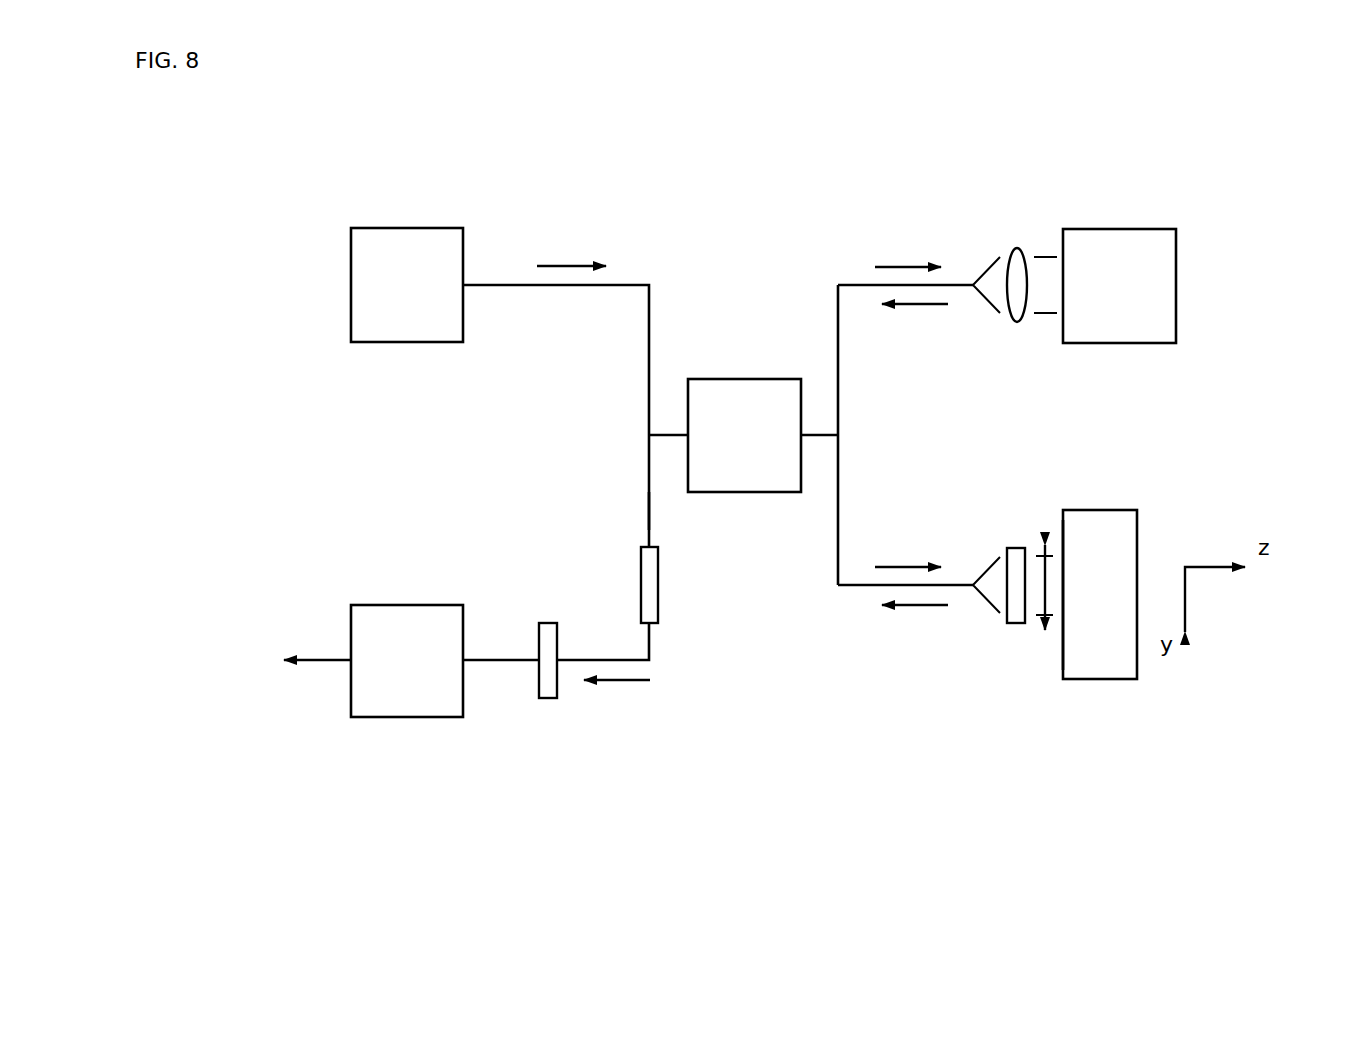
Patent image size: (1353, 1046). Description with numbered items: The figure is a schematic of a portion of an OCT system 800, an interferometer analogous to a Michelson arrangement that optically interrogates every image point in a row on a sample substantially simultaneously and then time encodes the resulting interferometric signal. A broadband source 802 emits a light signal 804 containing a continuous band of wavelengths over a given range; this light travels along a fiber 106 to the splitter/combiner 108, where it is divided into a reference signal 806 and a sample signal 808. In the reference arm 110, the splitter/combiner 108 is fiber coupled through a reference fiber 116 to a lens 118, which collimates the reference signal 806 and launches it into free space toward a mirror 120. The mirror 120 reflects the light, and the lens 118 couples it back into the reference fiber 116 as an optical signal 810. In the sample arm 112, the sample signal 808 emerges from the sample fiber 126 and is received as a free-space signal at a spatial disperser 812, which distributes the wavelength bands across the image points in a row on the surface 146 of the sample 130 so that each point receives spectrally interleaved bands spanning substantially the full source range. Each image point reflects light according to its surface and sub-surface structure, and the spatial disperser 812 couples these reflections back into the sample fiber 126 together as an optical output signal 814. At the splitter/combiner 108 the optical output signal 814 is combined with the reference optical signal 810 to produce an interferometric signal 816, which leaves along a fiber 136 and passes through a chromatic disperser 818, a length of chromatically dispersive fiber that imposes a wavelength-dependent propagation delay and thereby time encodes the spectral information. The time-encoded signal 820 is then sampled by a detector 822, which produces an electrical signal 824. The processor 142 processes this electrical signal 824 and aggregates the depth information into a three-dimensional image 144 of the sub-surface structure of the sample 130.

The system 800 is at (305, 158).
The source 802 is at (405, 228).
The light signal 804 is at (560, 266).
The source optical fiber 106 is at (649, 380).
The splitter/combiner 108 is at (745, 379).
The reference arm 110 is at (818, 203).
The reference fiber 116 is at (838, 302).
The reference signal 806 is at (905, 265).
The optical signal 810 is at (920, 308).
The lens 118 is at (1015, 248).
The mirror 120 is at (1120, 229).
The sample arm 112 is at (818, 685).
The sample fiber 126 is at (838, 570).
The sample signal 808 is at (915, 565).
The optical output signal 814 is at (920, 608).
The spatial disperser 812 is at (1015, 625).
The sample 130 is at (1100, 510).
The surface 146 is at (1065, 590).
The detection fiber 136 is at (649, 528).
The interferometric signal 816 is at (650, 492).
The chromatic disperser 818 is at (650, 605).
The detection light 820 is at (620, 683).
The detector 822 is at (548, 623).
The electrical signal 824 is at (483, 660).
The processor 142 is at (405, 717).
The image 144 is at (322, 663).